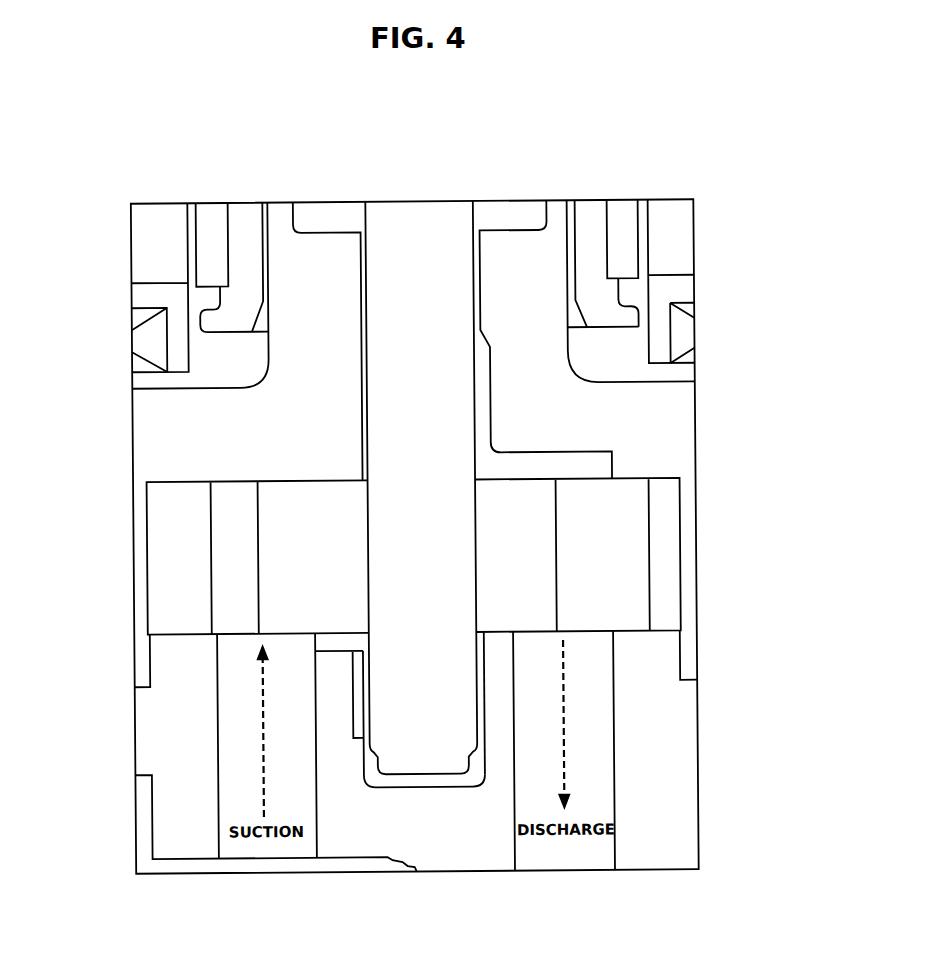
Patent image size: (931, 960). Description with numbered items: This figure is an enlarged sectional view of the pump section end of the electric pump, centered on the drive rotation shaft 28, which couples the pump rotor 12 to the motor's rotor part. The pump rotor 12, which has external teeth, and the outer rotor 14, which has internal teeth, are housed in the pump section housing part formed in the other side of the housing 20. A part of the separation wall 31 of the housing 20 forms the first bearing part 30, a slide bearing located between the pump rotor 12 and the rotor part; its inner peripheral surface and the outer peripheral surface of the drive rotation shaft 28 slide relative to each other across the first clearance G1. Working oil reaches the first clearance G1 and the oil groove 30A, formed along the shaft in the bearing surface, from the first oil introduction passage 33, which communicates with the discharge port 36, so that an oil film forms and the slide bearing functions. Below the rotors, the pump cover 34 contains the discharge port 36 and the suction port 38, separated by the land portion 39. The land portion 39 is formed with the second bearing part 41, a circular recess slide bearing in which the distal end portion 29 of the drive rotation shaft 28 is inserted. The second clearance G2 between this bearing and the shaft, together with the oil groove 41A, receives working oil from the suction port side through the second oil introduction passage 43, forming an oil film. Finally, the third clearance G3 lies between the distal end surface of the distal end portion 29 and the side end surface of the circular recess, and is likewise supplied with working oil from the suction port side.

The pump rotor 12 is at (535, 568).
The outer rotor 14 is at (168, 556).
The housing 20 is at (132, 408).
The drive rotation shaft 28 is at (418, 228).
The distal end portion 29 is at (450, 770).
The first bearing part 30 is at (364, 273).
The oil groove 30A is at (480, 308).
The separation wall 31 is at (313, 416).
The first oil introduction passage 33 is at (483, 426).
The pump cover 34 is at (676, 795).
The discharge port 36 is at (565, 858).
The suction port 38 is at (264, 847).
The land portion 39 is at (421, 802).
The second bearing part 41 is at (479, 710).
The oil groove 41A is at (356, 703).
The second oil introduction passage 43 is at (339, 641).
The first clearance G1 is at (364, 348).
The second clearance G2 is at (366, 693).
The third clearance G3 is at (390, 782).